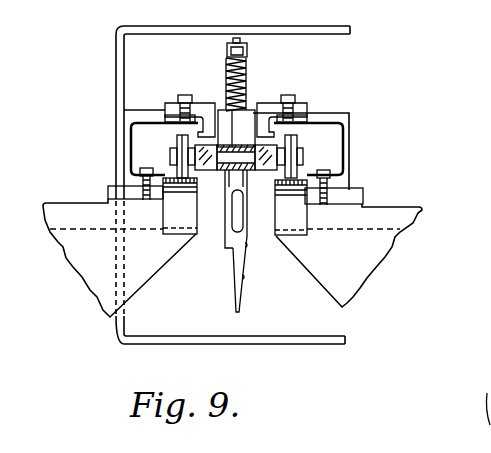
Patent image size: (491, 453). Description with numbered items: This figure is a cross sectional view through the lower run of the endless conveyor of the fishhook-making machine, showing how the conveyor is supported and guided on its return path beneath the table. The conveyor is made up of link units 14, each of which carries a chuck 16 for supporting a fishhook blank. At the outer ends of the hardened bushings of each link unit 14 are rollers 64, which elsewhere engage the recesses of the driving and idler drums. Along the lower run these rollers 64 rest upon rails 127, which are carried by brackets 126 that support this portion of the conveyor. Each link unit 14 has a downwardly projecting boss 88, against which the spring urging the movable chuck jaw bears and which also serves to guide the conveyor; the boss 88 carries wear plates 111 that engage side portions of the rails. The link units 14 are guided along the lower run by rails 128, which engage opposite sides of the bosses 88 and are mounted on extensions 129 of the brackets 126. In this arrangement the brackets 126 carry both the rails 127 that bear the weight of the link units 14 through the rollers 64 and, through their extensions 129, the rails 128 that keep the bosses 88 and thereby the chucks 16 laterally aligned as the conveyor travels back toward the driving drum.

The link unit 14 is at (266, 176).
The chuck 16 is at (235, 250).
The roller 64 is at (178, 145).
The boss 88 is at (230, 131).
The wear plate 111 is at (253, 123).
The bracket 126 is at (155, 272).
The rail 127 is at (283, 215).
The rail 128 is at (207, 106).
The extension 129 is at (130, 140).